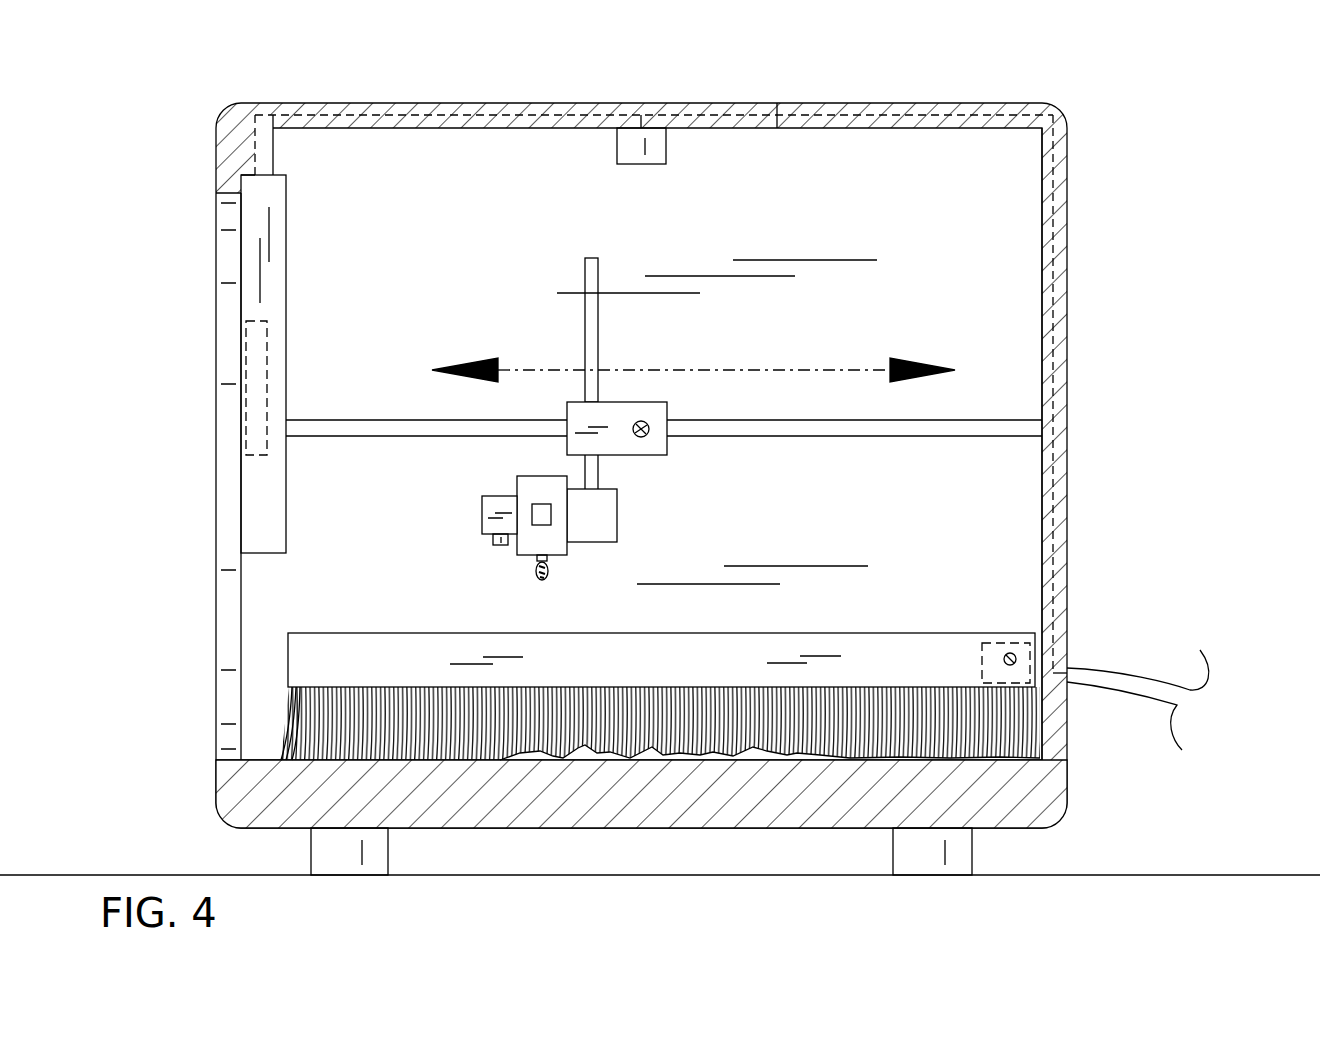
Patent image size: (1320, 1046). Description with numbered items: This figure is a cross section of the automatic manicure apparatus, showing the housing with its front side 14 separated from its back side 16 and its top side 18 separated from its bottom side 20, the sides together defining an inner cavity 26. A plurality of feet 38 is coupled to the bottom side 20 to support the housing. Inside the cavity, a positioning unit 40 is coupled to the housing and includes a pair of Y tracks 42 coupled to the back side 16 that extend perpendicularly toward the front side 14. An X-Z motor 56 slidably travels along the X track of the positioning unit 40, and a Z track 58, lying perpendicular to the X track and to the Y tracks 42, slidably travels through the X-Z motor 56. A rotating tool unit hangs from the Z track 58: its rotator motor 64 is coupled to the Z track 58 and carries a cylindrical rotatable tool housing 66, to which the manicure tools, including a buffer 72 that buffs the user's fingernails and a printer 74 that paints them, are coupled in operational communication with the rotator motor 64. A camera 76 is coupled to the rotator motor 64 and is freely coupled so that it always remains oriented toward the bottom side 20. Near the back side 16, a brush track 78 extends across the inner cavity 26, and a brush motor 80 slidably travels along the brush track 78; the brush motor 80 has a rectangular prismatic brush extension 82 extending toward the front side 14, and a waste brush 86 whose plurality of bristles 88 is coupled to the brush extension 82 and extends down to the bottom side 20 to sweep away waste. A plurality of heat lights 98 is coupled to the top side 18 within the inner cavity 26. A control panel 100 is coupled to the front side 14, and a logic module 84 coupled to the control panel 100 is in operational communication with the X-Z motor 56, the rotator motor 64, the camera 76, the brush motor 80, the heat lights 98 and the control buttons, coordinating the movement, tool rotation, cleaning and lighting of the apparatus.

The front side 14 is at (216, 602).
The back side 16 is at (1067, 352).
The top side 18 is at (926, 104).
The bottom side 20 is at (536, 800).
The inner cavity 26 is at (1022, 258).
The plurality of feet 38 is at (927, 858).
The positioning unit 40 is at (667, 411).
The pair of Y tracks 42 is at (975, 428).
The X-Z motor 56 is at (587, 413).
The Z track 58 is at (590, 283).
The rotator motor 64 is at (592, 518).
The rotatable tool housing 66 is at (567, 547).
The buffer 72 is at (537, 572).
The printer 74 is at (541, 514).
The camera 76 is at (490, 505).
The brush track 78 is at (1012, 660).
The brush motor 80 is at (1005, 683).
The brush extension 82 is at (872, 672).
The logic module 84 is at (250, 360).
The waste brush 86 is at (585, 727).
The plurality of bristles 88 is at (654, 733).
The plurality of heat lights 98 is at (660, 146).
The control panel 100 is at (262, 192).